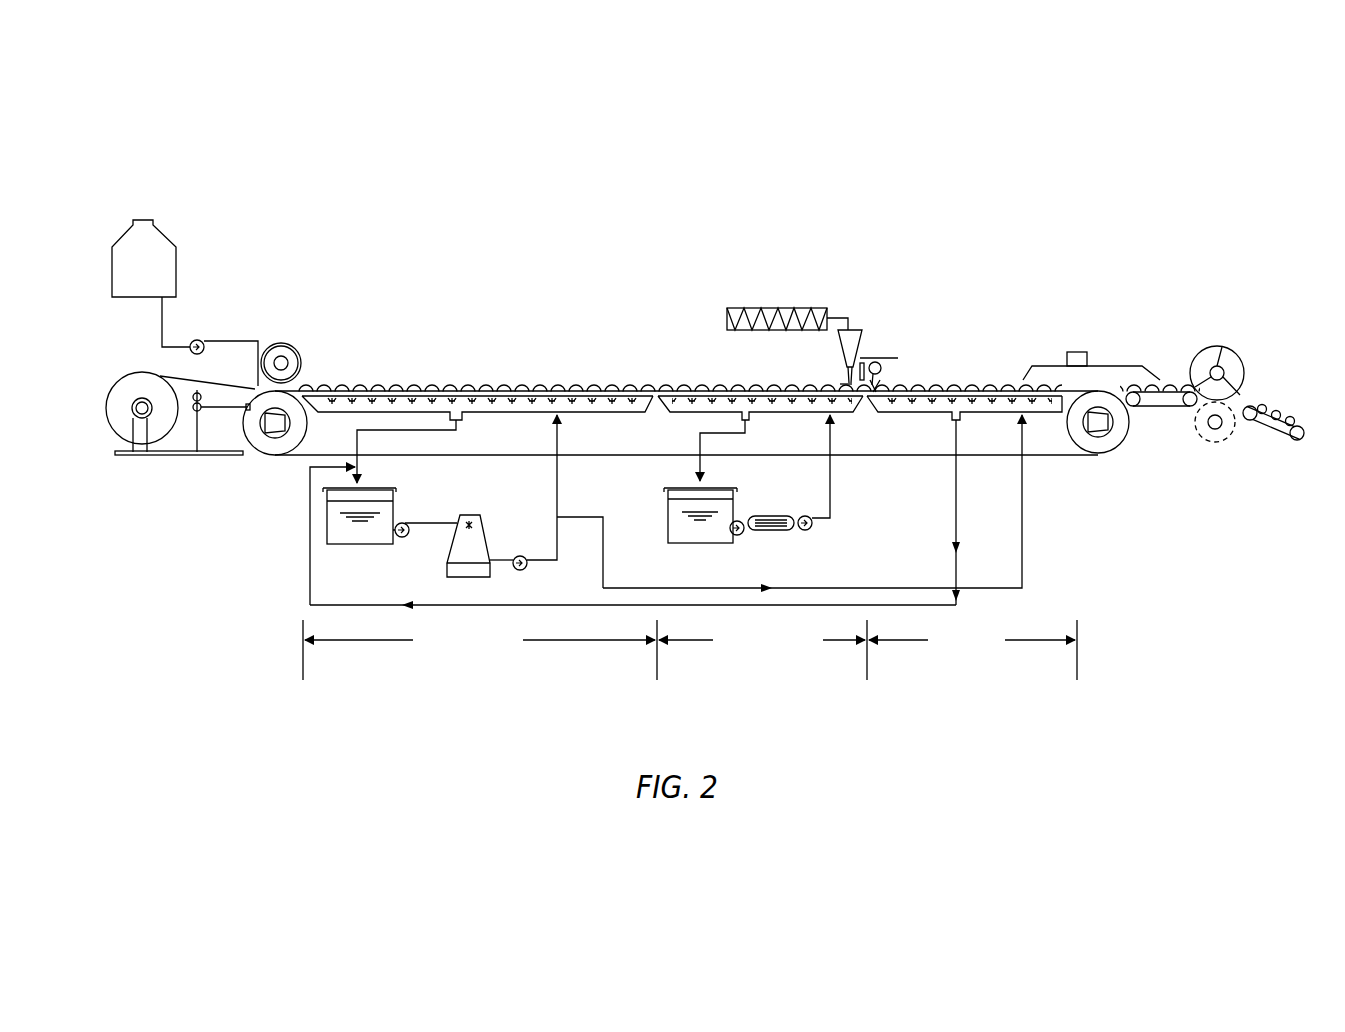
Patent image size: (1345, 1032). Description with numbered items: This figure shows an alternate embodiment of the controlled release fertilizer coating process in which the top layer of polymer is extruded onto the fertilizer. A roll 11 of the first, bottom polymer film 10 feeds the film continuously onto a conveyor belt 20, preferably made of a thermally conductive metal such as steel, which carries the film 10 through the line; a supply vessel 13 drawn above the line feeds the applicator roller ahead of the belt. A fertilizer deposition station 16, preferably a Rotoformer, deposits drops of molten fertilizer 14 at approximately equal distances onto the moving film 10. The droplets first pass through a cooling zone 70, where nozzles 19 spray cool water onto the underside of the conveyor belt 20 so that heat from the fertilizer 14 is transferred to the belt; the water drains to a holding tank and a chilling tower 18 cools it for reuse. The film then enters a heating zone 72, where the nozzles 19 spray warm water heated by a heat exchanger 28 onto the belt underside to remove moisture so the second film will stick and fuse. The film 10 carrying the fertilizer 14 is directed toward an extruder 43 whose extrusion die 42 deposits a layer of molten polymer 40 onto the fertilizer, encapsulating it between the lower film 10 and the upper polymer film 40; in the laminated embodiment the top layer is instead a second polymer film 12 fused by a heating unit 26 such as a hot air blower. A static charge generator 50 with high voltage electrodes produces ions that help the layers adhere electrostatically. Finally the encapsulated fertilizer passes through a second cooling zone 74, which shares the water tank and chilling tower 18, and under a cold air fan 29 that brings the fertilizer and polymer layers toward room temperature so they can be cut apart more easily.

The polymer film 10 is at (183, 382).
The roll 11 is at (112, 434).
The polymer film 12 is at (1253, 410).
The liquid reservoir 13 is at (165, 262).
The fertilizer 14 is at (358, 382).
The fertilizer deposition station 16 is at (304, 340).
The chilling tower 18 is at (472, 548).
The nozzles 19 is at (495, 395).
The conveyor belt 20 is at (297, 457).
The heating unit 26 is at (889, 375).
The heat exchanger 28 is at (773, 528).
The cold air fan 29 is at (1075, 352).
The polymer 40 is at (838, 381).
The extrusion die 42 is at (856, 337).
The extruder 43 is at (810, 327).
The static charge generator 50 is at (871, 354).
The cooling zone 70 is at (458, 661).
The heating zone 72 is at (745, 661).
The second cooling zone 74 is at (960, 661).